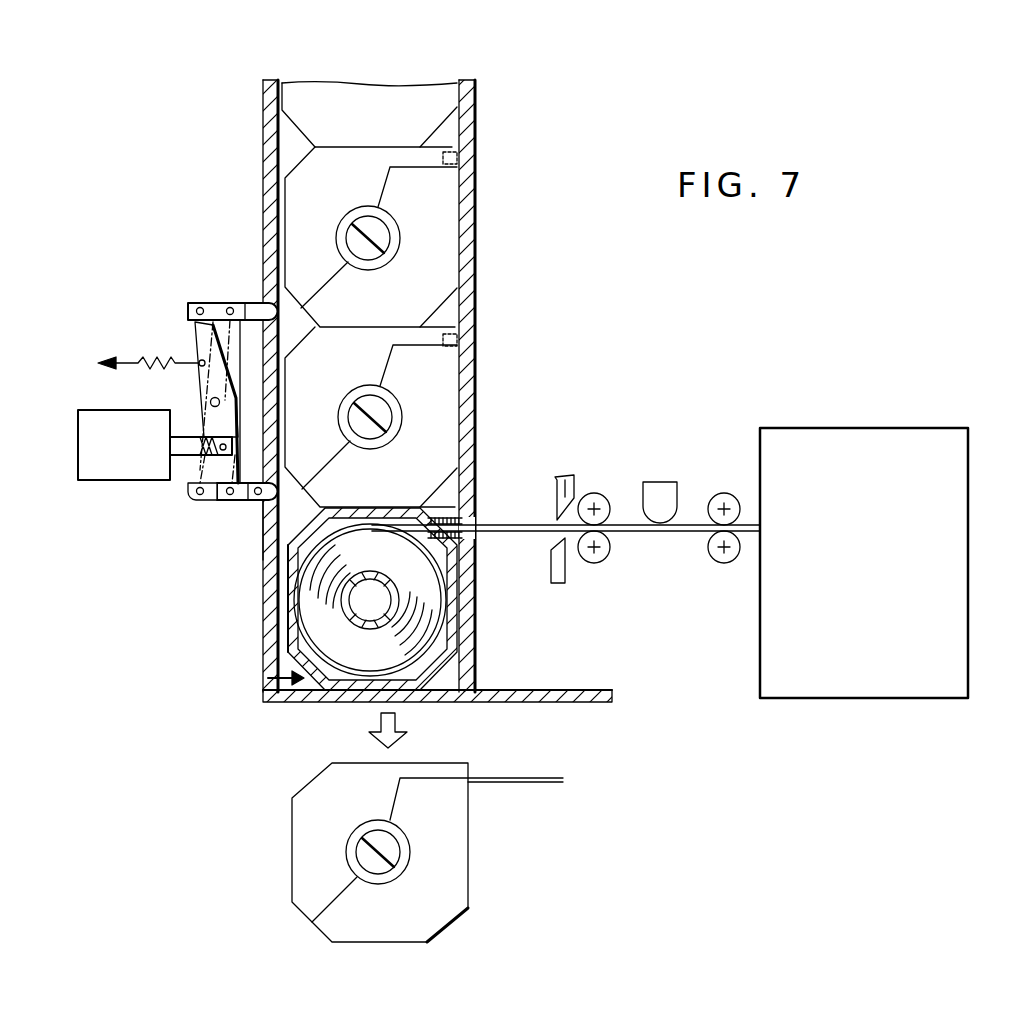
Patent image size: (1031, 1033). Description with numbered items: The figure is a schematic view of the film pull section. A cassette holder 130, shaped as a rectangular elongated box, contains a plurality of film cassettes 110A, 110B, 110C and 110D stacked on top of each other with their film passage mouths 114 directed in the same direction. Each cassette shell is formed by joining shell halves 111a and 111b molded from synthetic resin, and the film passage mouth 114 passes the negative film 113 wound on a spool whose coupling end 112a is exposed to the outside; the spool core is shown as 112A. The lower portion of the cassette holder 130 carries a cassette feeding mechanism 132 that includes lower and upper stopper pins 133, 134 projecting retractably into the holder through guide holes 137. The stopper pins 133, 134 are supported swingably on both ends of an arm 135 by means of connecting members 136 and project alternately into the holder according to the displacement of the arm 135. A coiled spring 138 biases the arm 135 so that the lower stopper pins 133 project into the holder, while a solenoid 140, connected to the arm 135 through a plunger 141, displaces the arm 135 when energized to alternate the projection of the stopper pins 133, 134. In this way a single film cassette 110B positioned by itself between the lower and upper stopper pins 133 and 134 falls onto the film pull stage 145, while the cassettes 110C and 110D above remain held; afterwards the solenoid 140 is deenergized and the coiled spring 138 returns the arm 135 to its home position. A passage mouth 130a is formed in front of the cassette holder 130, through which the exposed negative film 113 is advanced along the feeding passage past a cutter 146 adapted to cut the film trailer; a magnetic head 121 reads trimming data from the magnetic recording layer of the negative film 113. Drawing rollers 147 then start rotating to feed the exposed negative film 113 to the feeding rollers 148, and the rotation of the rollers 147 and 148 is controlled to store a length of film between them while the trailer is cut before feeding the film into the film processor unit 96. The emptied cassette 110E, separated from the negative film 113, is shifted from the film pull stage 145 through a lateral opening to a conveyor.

The film processor unit 96 is at (855, 428).
The film cassette 110A is at (366, 634).
The film cassette 110B is at (440, 395).
The film cassette 110C is at (440, 262).
The film cassette 110D is at (425, 106).
The emptied film cassette 110E is at (366, 852).
The shell half 111a is at (292, 641).
The shell half 111b is at (320, 705).
The film roll core 112A is at (405, 618).
The coupling end 112a is at (393, 848).
The negative film 113 is at (518, 540).
The film passage mouth 114 is at (457, 158).
The magnetic head 121 is at (660, 490).
The cassette holder 130 is at (474, 217).
The film outlet slot 130a is at (477, 520).
The cassette feeding mechanism 132 is at (167, 398).
The lower stopper pin 133 is at (276, 537).
The upper stopper pin 134 is at (247, 303).
The arm 135 is at (198, 348).
The connecting member 136 is at (210, 303).
The guide hole 137 is at (267, 300).
The coiled spring 138 is at (146, 372).
The solenoid 140 is at (117, 481).
The plunger 141 is at (200, 457).
The film pull stage 145 is at (268, 679).
The cutter 146 is at (578, 490).
The drawing rollers 147 is at (594, 563).
The feeding rollers 148 is at (724, 563).